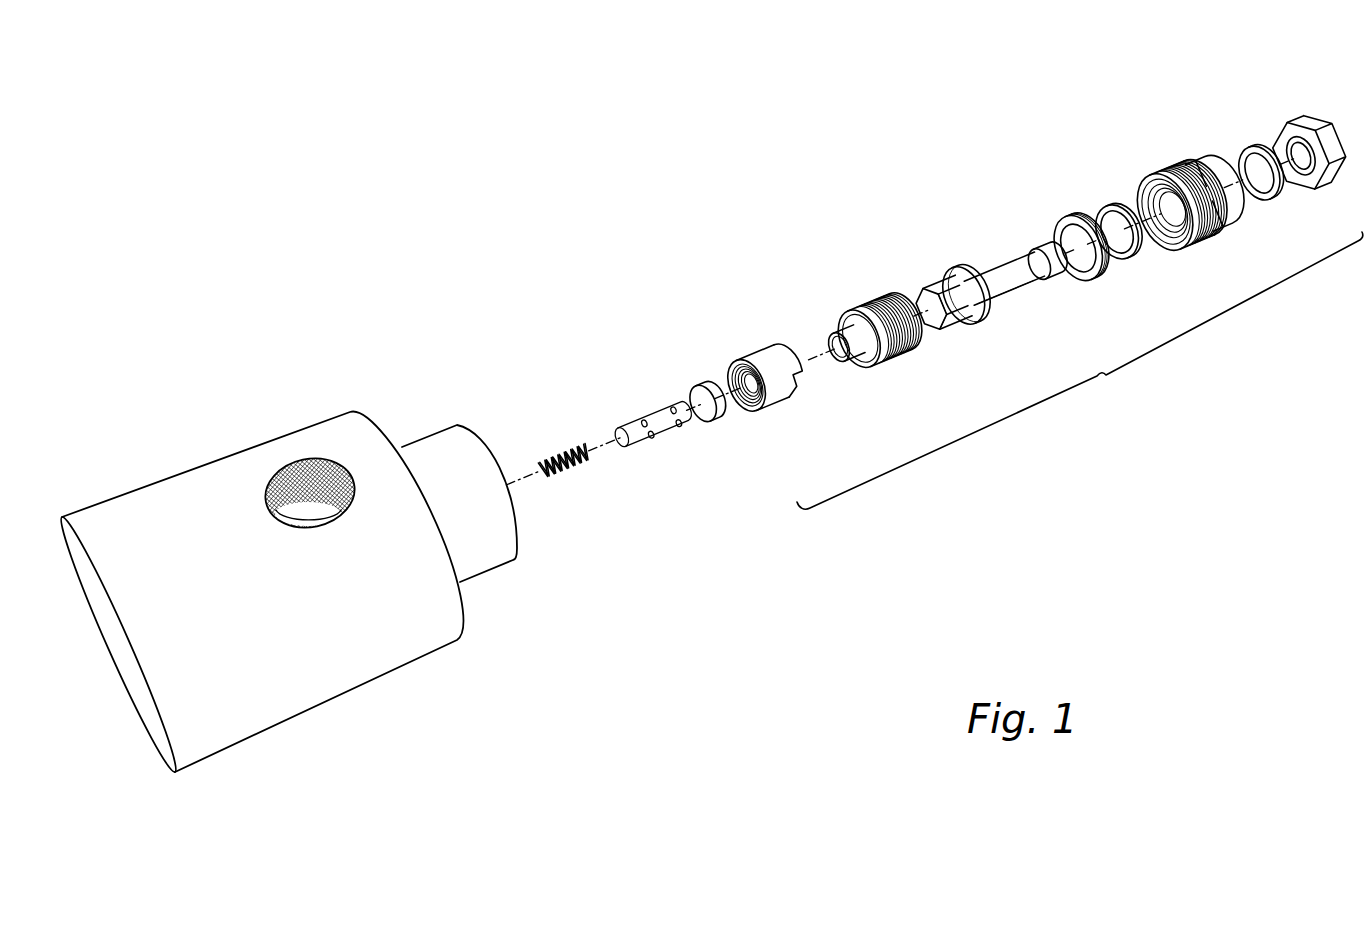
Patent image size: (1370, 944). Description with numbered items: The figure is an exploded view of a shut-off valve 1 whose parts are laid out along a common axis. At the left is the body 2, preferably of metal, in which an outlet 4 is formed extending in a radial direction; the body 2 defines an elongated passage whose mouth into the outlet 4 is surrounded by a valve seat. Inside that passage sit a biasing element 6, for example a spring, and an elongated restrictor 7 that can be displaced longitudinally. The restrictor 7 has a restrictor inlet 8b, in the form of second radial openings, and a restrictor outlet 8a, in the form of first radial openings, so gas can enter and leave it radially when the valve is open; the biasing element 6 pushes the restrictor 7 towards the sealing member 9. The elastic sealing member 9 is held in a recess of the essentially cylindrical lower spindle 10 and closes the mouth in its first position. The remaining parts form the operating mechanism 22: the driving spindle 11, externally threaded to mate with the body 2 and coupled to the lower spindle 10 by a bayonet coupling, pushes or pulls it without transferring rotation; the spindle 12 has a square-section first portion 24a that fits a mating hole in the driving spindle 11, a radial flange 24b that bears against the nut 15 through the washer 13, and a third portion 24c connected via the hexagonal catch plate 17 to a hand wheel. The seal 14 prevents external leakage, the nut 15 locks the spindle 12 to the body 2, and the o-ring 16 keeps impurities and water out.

The shut-off valve 1 is at (212, 358).
The body 2 is at (183, 470).
The outlet 4 is at (312, 508).
The biasing element 6 is at (557, 443).
The restrictor 7 is at (650, 410).
The restrictor outlet 8a is at (652, 433).
The restrictor inlet 8b is at (678, 420).
The sealing member 9 is at (708, 380).
The lower spindle 10 is at (762, 350).
The driving spindle 11 is at (862, 290).
The spindle 12 is at (995, 250).
The washer 13 is at (1067, 217).
The seal 14 is at (1120, 203).
The nut 15 is at (1162, 163).
The o-ring 16 is at (1250, 147).
The catch plate 17 is at (1295, 117).
The operating mechanism 22 is at (1080, 370).
The first portion of the spindle 24a is at (960, 317).
The flange 24b is at (988, 310).
The third portion of the spindle 24c is at (1030, 300).